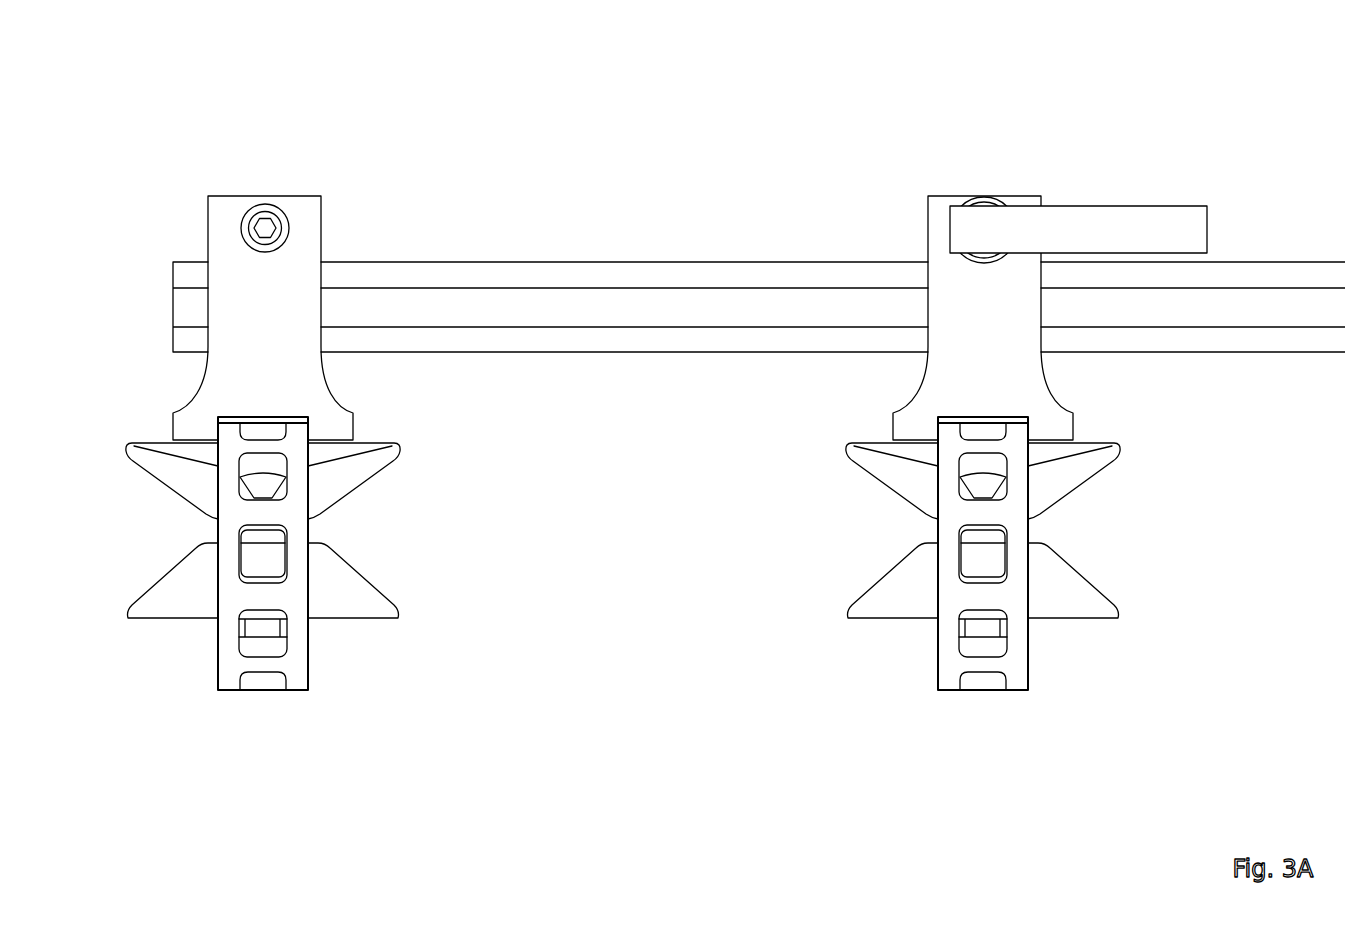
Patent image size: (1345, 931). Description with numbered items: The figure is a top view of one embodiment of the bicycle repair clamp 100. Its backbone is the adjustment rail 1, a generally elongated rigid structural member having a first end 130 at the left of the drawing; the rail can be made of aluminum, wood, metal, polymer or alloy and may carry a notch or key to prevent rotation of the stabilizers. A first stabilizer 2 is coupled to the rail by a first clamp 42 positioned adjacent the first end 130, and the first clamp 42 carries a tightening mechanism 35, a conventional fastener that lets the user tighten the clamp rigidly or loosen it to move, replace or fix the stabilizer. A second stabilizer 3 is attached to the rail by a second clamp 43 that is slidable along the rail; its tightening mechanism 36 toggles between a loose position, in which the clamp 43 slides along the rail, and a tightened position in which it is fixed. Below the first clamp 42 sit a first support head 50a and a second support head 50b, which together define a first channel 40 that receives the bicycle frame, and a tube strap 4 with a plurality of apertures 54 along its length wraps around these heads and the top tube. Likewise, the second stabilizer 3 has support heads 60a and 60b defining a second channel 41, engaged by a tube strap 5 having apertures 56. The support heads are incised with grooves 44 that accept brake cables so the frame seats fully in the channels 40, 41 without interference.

The adjustment rail 1 is at (639, 302).
The first stabilizer 2 is at (326, 516).
The second stabilizer 3 is at (996, 517).
The tube strap 4 is at (297, 665).
The tube strap 5 is at (952, 668).
The tightening mechanism 35 is at (268, 222).
The tightening mechanism 36 is at (1039, 229).
The first channel 40 is at (326, 548).
The second channel 41 is at (959, 548).
The first clamp 42 is at (229, 220).
The second clamp 43 is at (942, 212).
The grooves 44 is at (387, 463).
The first support head 50a is at (362, 468).
The second support head 50b is at (372, 603).
The apertures 54 is at (253, 620).
The apertures 56 is at (990, 628).
The first support head 60a is at (1093, 460).
The second support head 60b is at (1100, 612).
The bicycle repair clamp 100 is at (502, 193).
The first end 130 is at (126, 324).